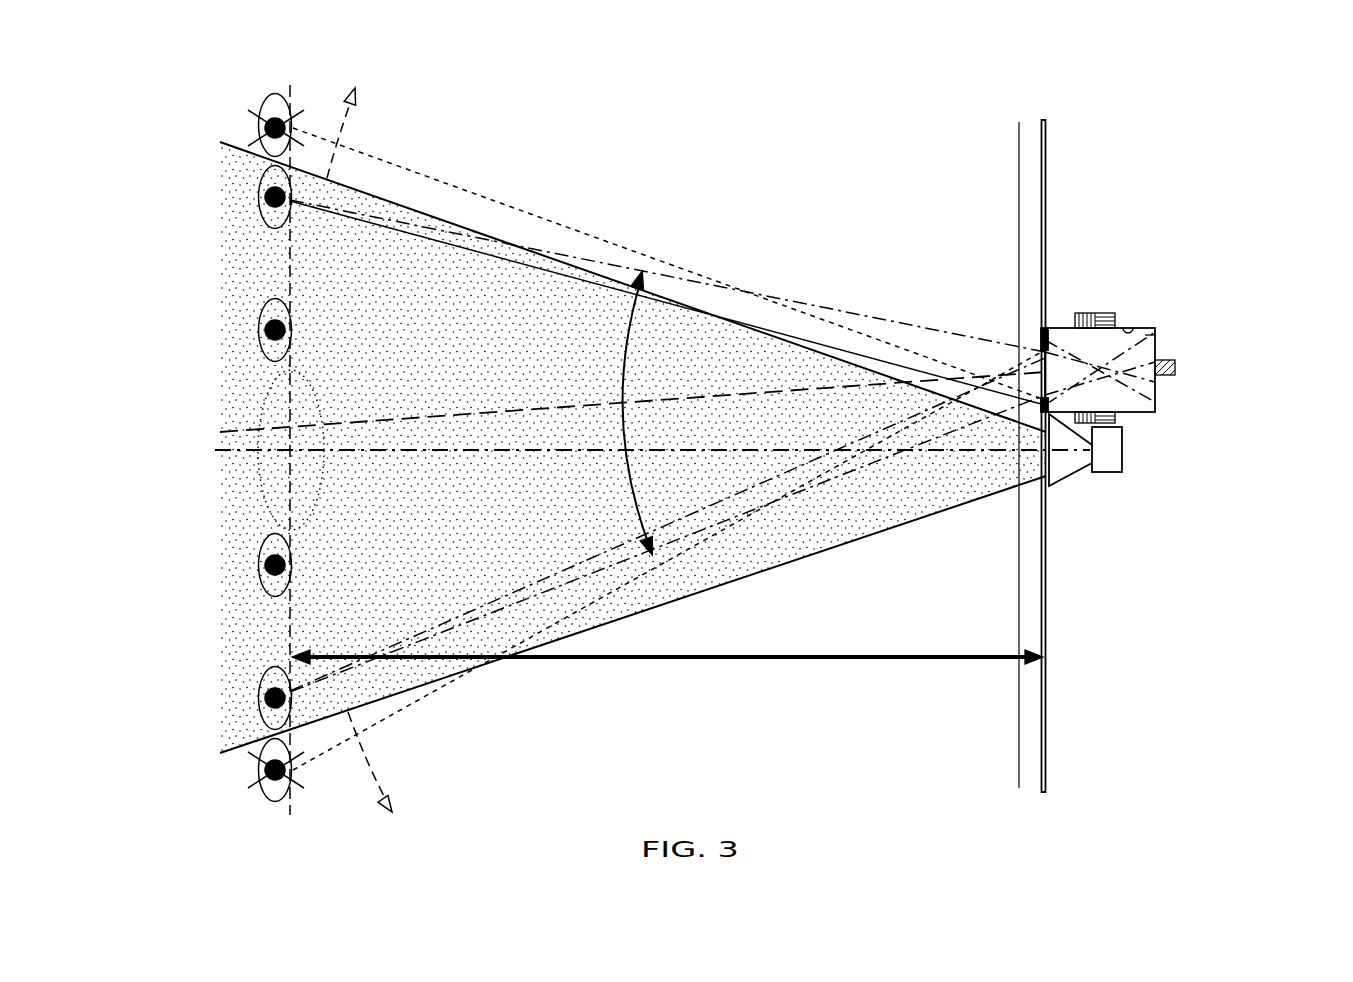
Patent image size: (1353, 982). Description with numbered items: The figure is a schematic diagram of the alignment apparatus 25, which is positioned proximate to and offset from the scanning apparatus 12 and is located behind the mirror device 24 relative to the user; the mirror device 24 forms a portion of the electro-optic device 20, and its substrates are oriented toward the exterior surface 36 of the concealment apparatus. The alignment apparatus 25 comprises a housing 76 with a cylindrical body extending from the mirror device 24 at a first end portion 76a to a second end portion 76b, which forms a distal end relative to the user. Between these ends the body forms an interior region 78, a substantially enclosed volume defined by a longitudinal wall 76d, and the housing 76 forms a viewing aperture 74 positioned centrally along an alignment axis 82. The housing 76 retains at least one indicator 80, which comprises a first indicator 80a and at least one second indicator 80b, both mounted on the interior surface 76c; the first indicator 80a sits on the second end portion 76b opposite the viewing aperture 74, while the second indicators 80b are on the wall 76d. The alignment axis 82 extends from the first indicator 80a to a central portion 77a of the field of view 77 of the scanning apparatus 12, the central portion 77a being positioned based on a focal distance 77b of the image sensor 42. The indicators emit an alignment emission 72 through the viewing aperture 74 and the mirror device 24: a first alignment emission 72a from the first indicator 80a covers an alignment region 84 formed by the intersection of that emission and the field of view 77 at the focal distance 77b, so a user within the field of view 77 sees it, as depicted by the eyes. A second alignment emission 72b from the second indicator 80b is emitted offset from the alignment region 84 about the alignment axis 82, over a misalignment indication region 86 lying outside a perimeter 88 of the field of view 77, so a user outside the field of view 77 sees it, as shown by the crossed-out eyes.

The scanning apparatus 12 is at (1112, 523).
The electro-optic device 20 is at (1070, 167).
The mirror device 24 is at (1032, 115).
The alignment apparatus 25 is at (1248, 345).
The exterior surface 36 is at (1018, 207).
The image sensor 42 is at (1112, 457).
The alignment emission 72 is at (722, 441).
The first alignment emission 72a is at (583, 252).
The second alignment emission 72b is at (463, 185).
The viewing aperture 74 is at (1043, 342).
The housing 76 is at (1104, 343).
The first end portion 76a is at (1043, 335).
The second end portion 76b is at (1157, 397).
The interior surface 76c is at (1135, 328).
The longitudinal wall 76d is at (1145, 345).
The field of view 77 is at (532, 443).
The central portion 77a is at (226, 418).
The focal distance 77b is at (645, 660).
The interior region 78 is at (1110, 405).
The indicator 80 is at (1207, 357).
The first indicator 80a is at (1178, 367).
The second indicator 80b is at (1085, 312).
The alignment axis 82 is at (797, 392).
The alignment region 84 is at (628, 347).
The misalignment indication region 86 is at (358, 136).
The perimeter 88 is at (230, 140).